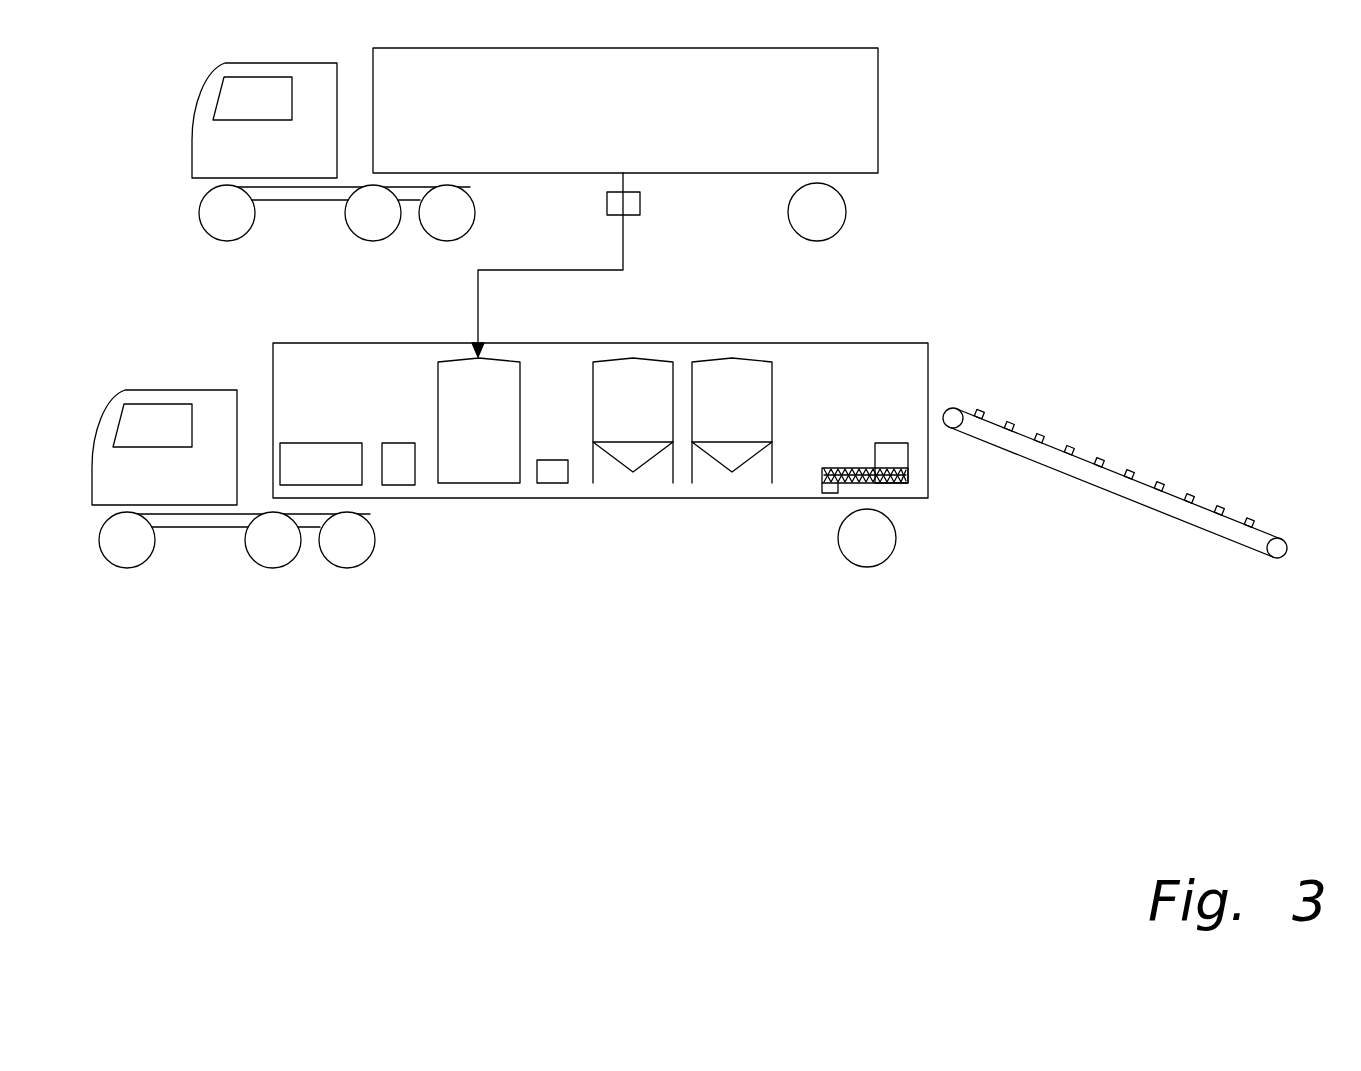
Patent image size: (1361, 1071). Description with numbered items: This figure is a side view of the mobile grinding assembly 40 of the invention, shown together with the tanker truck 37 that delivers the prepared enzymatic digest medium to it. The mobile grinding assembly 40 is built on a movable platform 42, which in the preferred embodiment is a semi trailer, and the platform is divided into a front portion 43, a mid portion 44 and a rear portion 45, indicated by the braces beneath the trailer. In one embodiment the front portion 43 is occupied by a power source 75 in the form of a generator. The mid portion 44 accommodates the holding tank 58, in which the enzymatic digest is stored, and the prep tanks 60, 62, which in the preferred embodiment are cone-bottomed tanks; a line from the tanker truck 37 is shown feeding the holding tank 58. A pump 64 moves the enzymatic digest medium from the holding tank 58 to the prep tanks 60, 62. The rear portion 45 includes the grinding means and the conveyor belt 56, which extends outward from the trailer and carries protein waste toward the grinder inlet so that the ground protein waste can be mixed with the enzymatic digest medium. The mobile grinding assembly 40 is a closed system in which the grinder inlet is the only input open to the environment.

The tanker truck 37 is at (878, 70).
The mobile grinding assembly 40 is at (920, 263).
The movable platform 42 is at (607, 499).
The front portion 43 is at (362, 507).
The mid portion 44 is at (587, 454).
The rear portion 45 is at (930, 567).
The conveyor belt 56 is at (1053, 445).
The holding tank 58 is at (447, 358).
The prep tank 60 is at (627, 362).
The prep tank 62 is at (742, 362).
The pump 64 is at (542, 483).
The power source 75 is at (335, 443).